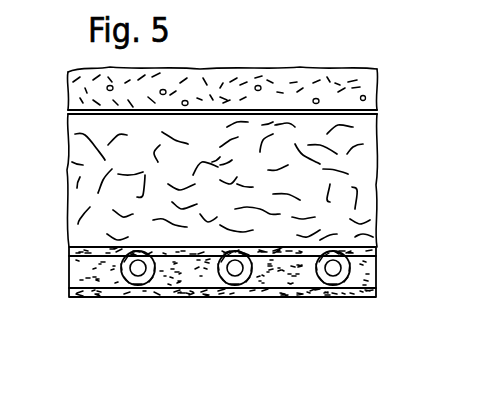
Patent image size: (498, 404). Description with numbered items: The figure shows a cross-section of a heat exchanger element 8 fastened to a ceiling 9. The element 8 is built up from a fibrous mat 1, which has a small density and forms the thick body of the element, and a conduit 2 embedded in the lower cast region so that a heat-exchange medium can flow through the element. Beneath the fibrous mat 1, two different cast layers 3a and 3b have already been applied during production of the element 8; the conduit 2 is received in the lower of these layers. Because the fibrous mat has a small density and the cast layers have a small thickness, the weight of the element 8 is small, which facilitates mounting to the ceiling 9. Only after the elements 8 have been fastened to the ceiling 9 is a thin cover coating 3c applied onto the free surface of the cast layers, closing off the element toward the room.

The fibrous mat 1 is at (370, 158).
The conduit 2 is at (121, 268).
The cast layer 3a is at (378, 250).
The cast layer 3b is at (378, 275).
The cover coating 3c is at (363, 297).
The heat exchanger element 8 is at (257, 308).
The ceiling 9 is at (375, 83).